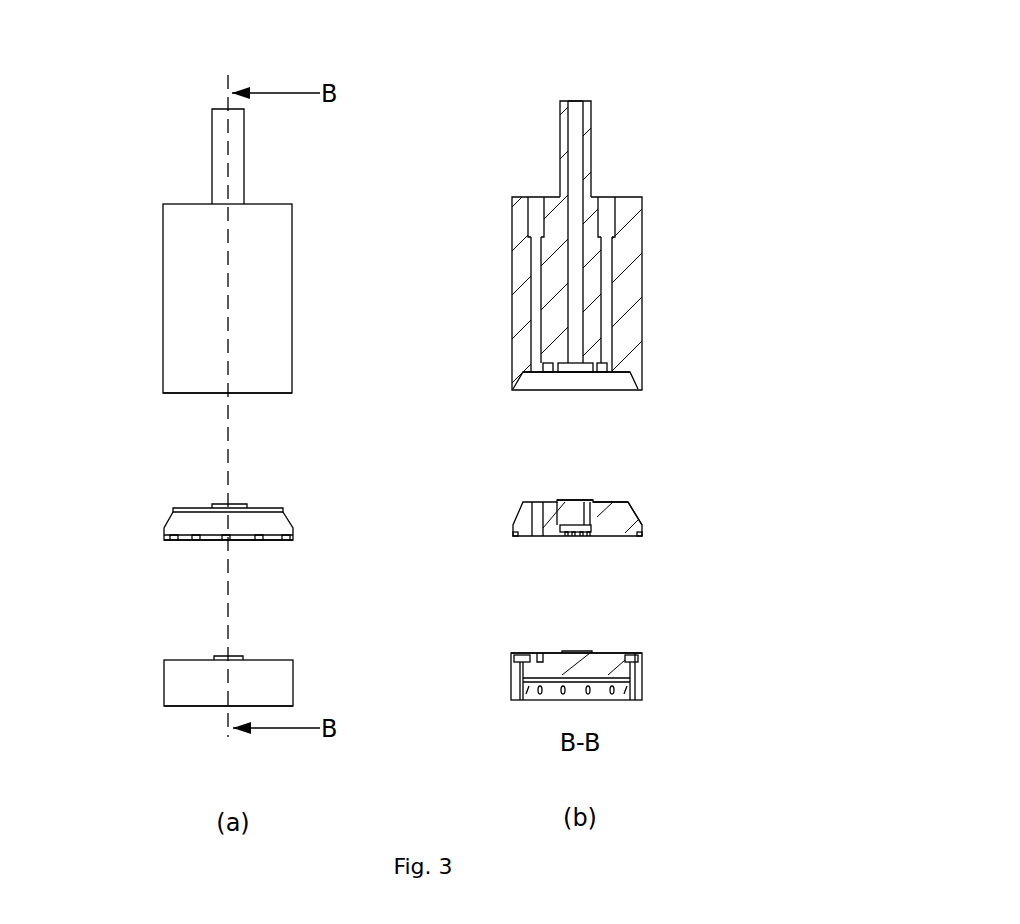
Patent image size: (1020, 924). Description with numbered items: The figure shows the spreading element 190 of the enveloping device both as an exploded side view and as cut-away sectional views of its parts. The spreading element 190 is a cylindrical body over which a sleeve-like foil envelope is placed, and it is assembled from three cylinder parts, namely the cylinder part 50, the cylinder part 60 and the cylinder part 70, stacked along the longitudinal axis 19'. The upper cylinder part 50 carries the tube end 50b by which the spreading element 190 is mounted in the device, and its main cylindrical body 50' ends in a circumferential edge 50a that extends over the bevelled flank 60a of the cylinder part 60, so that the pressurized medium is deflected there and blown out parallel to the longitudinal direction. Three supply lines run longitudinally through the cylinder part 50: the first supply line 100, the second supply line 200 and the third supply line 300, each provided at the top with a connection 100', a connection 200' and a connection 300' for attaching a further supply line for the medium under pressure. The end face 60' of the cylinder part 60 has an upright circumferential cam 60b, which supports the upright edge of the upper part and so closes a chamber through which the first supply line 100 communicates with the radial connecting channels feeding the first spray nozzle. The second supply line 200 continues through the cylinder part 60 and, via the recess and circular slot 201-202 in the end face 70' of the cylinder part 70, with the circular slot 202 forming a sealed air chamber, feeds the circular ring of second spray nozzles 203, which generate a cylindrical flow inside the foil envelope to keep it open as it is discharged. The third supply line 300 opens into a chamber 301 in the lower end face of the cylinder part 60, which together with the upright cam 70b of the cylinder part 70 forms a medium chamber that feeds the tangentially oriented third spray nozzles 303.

The spreading element 190 is at (332, 137).
The longitudinal axis 19' is at (159, 406).
The cylinder part 50 is at (477, 264).
The upper tip part body 50' is at (179, 298).
The tube end 50b is at (218, 158).
The circumferential edge 50a is at (641, 392).
The third supply line 300 is at (640, 236).
The connection 300' is at (610, 86).
The second supply line 200 is at (460, 304).
The connection 200' is at (514, 180).
The first supply line 100 is at (670, 293).
The connection 100' is at (672, 203).
The cylinder part 60 is at (421, 522).
The end face 60' is at (363, 474).
The bevelled flank 60a is at (640, 508).
The upright circumferential cam 60b is at (583, 500).
The third spray nozzles 303 is at (252, 542).
The chamber 301 is at (578, 535).
The cylinder part 70 is at (411, 687).
The end face 70' is at (383, 614).
The upright cam 70b is at (577, 652).
The recess and circular slot 201-202 is at (528, 656).
The circular slot 202 is at (634, 657).
The second spray nozzles 203 is at (523, 670).